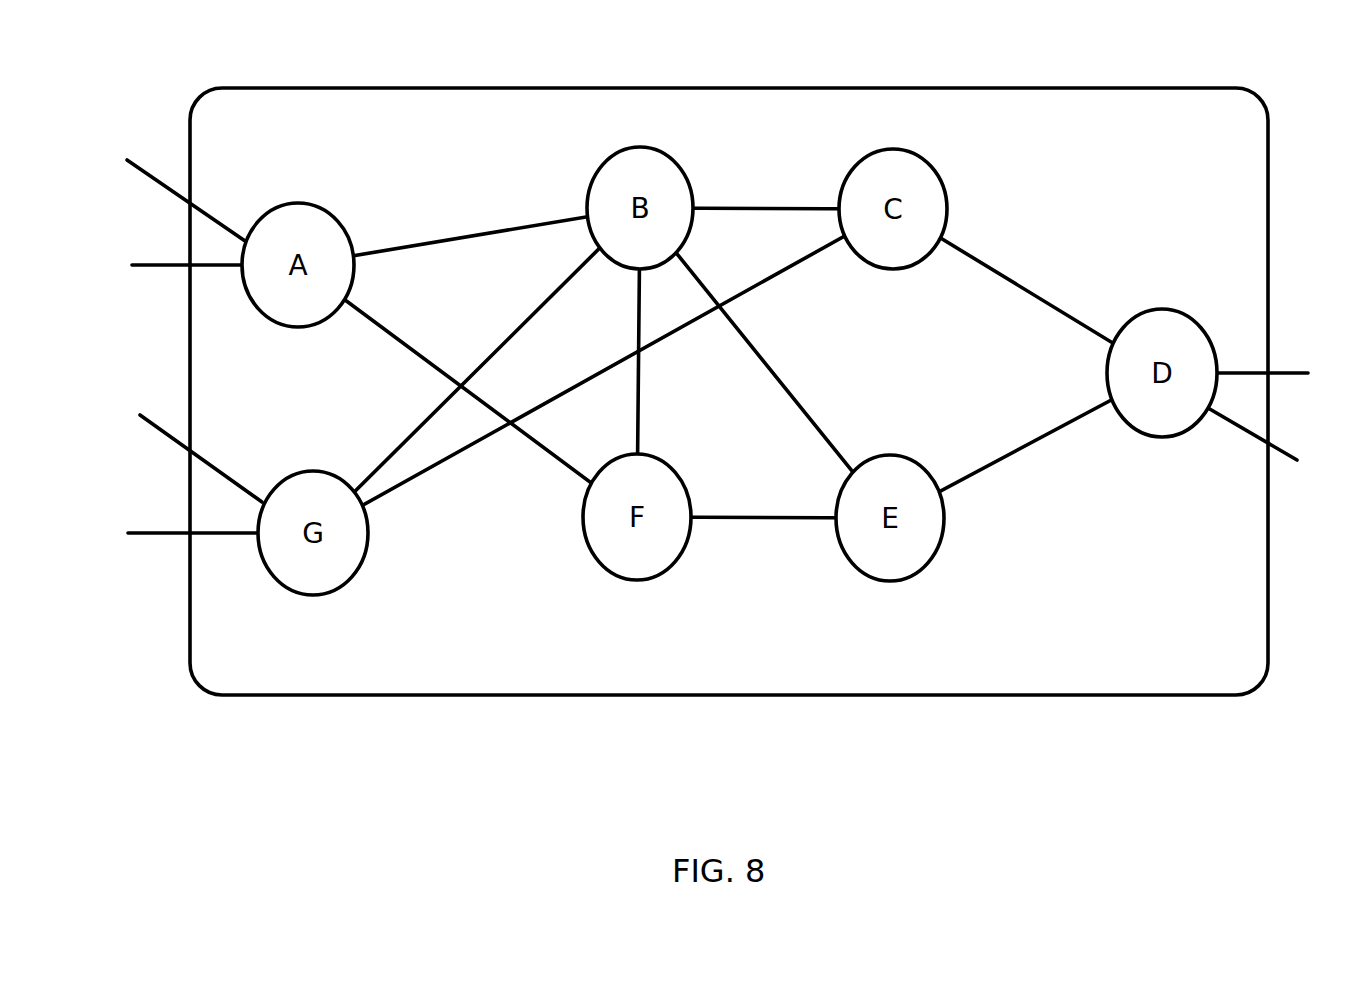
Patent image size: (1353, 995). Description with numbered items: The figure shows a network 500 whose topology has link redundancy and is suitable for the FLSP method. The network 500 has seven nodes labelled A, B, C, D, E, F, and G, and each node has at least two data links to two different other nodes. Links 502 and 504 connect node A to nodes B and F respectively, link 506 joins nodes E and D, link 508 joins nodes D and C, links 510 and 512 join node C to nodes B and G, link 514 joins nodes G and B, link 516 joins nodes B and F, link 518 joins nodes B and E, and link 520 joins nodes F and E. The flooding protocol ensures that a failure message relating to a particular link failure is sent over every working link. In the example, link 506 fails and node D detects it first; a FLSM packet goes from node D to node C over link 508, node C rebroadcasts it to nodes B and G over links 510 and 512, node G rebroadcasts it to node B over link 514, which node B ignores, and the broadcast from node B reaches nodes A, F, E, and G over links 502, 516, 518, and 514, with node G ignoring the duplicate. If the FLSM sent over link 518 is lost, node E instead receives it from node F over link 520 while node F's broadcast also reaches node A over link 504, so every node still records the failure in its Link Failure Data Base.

The network 500 is at (472, 88).
The link 502 is at (482, 232).
The link 504 is at (402, 348).
The link 506 is at (1028, 440).
The link 508 is at (1050, 302).
The link 510 is at (816, 208).
The link 512 is at (430, 470).
The link 514 is at (522, 318).
The link 516 is at (655, 420).
The link 518 is at (795, 400).
The link 520 is at (795, 520).